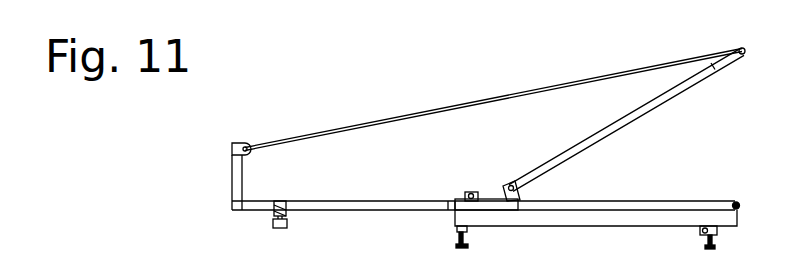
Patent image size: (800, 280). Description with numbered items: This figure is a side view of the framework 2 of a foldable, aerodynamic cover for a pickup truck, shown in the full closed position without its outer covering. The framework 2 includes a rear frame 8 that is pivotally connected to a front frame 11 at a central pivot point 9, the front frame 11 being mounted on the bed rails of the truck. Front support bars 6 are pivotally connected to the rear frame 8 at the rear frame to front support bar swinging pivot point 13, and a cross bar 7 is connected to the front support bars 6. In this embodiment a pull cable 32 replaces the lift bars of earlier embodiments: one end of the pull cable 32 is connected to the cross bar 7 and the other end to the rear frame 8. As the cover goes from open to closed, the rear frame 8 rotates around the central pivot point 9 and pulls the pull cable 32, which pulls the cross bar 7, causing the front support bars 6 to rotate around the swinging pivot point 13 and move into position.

The framework 2 is at (230, 141).
The pull cable 32 is at (400, 120).
The cross bar 7 is at (743, 56).
The front support bars 6 is at (593, 135).
The rear frame to front support bar swinging pivot point 13 is at (508, 184).
The central pivot point 9 is at (472, 192).
The rear frame 8 is at (390, 203).
The front frame 11 is at (632, 225).